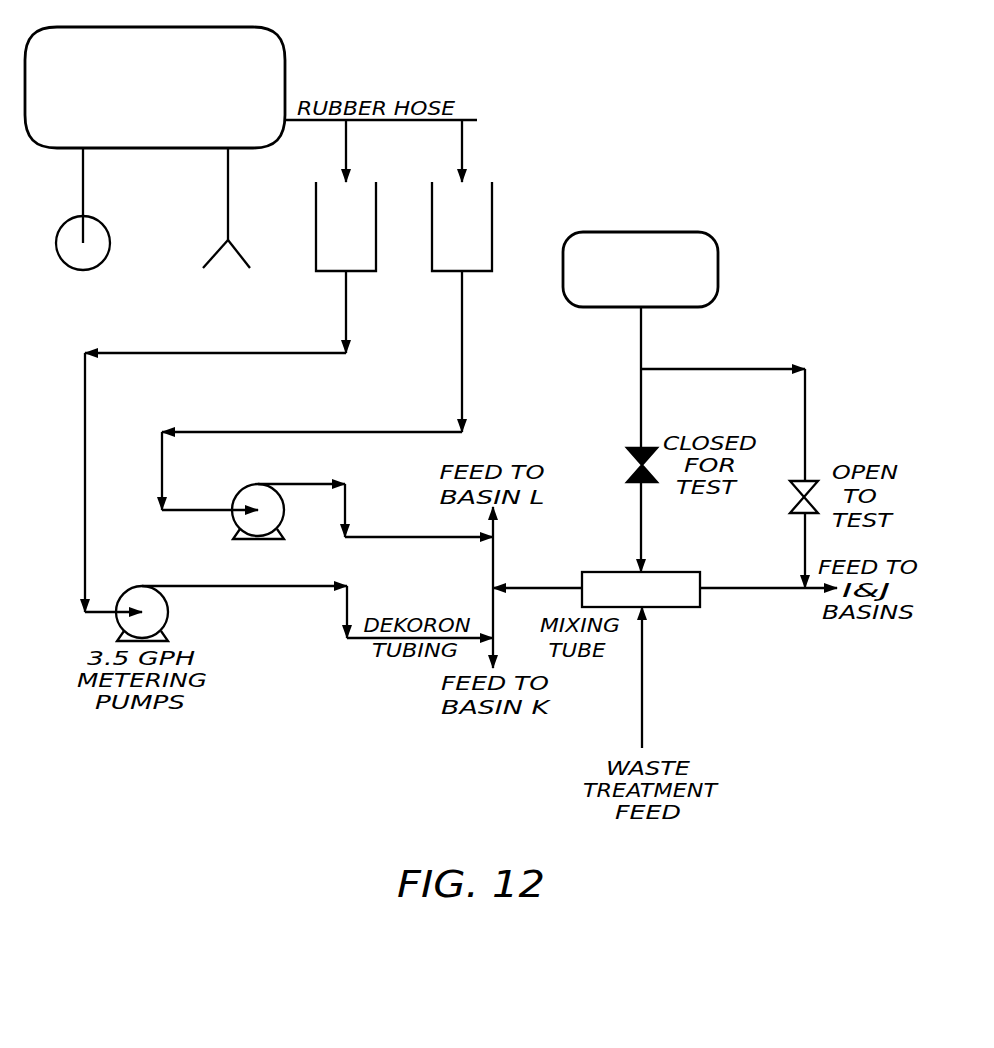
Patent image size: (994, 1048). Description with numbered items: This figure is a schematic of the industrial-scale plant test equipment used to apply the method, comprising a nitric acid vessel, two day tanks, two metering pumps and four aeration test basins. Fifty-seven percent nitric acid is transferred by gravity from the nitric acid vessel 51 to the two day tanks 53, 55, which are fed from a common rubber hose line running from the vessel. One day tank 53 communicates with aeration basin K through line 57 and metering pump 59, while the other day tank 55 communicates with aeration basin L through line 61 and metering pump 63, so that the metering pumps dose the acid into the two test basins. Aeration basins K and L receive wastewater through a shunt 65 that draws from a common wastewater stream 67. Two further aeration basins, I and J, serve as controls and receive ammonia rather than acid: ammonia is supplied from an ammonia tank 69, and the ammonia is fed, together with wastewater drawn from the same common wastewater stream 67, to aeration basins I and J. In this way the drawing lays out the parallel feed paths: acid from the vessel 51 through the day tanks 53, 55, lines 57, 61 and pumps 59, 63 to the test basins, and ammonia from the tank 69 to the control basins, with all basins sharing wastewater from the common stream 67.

The nitric acid vessel 51 is at (284, 56).
The day tank 53 is at (359, 272).
The day tank 55 is at (475, 272).
The line 57 is at (347, 322).
The metering pump 59 is at (168, 606).
The line 61 is at (463, 394).
The metering pump 63 is at (284, 512).
The shunt 65 is at (719, 268).
The common wastewater stream 67 is at (806, 403).
The ammonia tank 69 is at (742, 590).